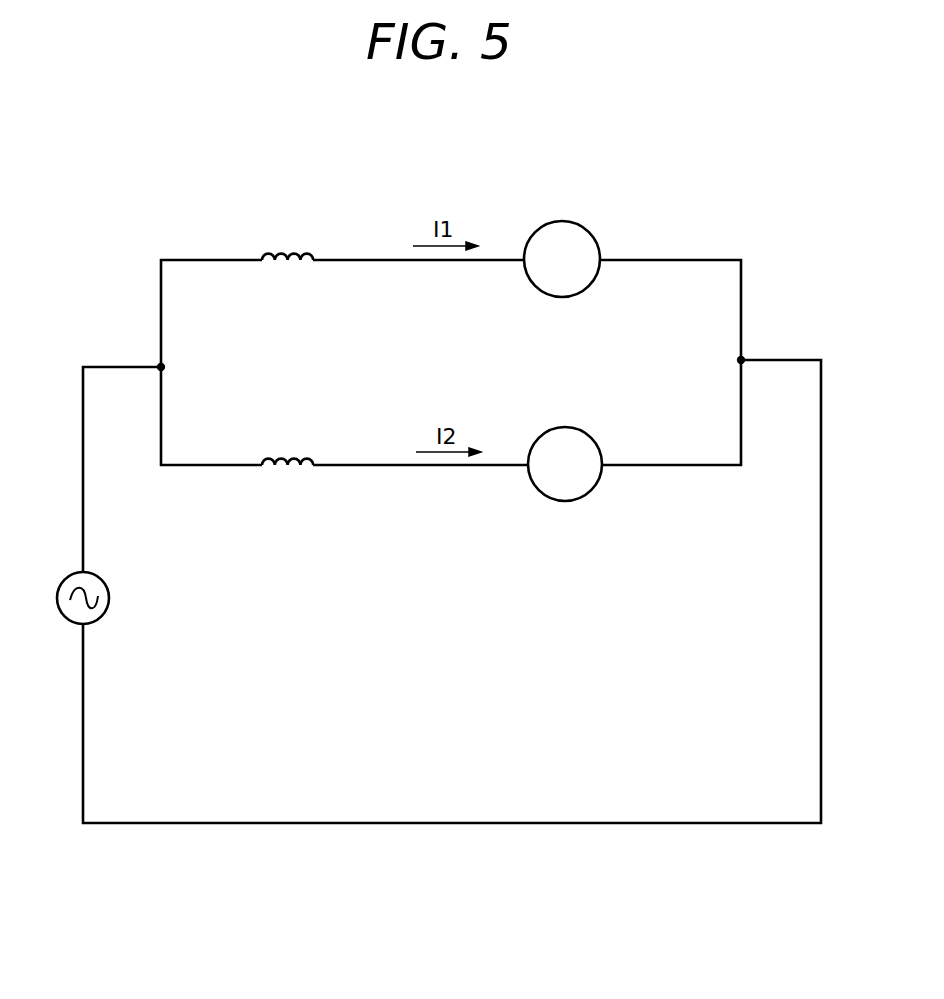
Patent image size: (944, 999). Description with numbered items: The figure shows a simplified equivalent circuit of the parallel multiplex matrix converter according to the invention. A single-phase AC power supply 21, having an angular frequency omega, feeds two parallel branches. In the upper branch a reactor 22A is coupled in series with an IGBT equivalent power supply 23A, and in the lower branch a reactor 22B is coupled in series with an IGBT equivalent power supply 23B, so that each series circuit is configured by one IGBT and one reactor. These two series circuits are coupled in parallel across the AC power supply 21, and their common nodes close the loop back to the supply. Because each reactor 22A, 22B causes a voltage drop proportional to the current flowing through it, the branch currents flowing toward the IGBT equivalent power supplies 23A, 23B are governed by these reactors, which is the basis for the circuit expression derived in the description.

The single-phase AC power supply 21 is at (108, 577).
The reactor 22A is at (265, 255).
The reactor 22B is at (268, 459).
The IGBT equivalent power supply 23A is at (562, 221).
The IGBT equivalent power supply 23B is at (565, 427).